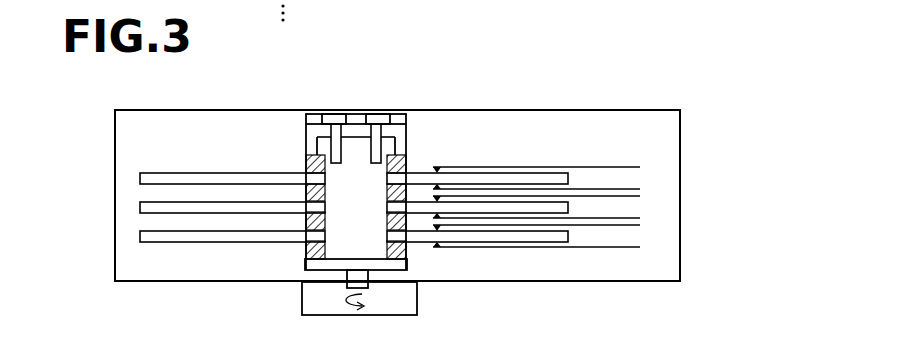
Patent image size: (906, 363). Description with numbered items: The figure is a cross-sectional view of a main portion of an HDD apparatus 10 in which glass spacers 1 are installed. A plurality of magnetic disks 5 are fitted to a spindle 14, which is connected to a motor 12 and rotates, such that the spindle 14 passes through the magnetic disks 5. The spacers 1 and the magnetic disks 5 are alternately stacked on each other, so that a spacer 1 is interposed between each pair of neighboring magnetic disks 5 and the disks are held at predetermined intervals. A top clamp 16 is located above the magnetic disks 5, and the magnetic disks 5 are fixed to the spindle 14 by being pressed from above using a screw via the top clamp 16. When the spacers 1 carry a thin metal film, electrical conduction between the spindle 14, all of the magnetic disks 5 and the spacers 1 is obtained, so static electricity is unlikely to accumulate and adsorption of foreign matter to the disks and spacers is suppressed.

The spacer 1 is at (311, 222).
The magnetic disk 5 is at (250, 240).
The HDD apparatus 10 is at (648, 110).
The motor 12 is at (403, 297).
The spindle 14 is at (357, 161).
The top clamp 16 is at (357, 137).